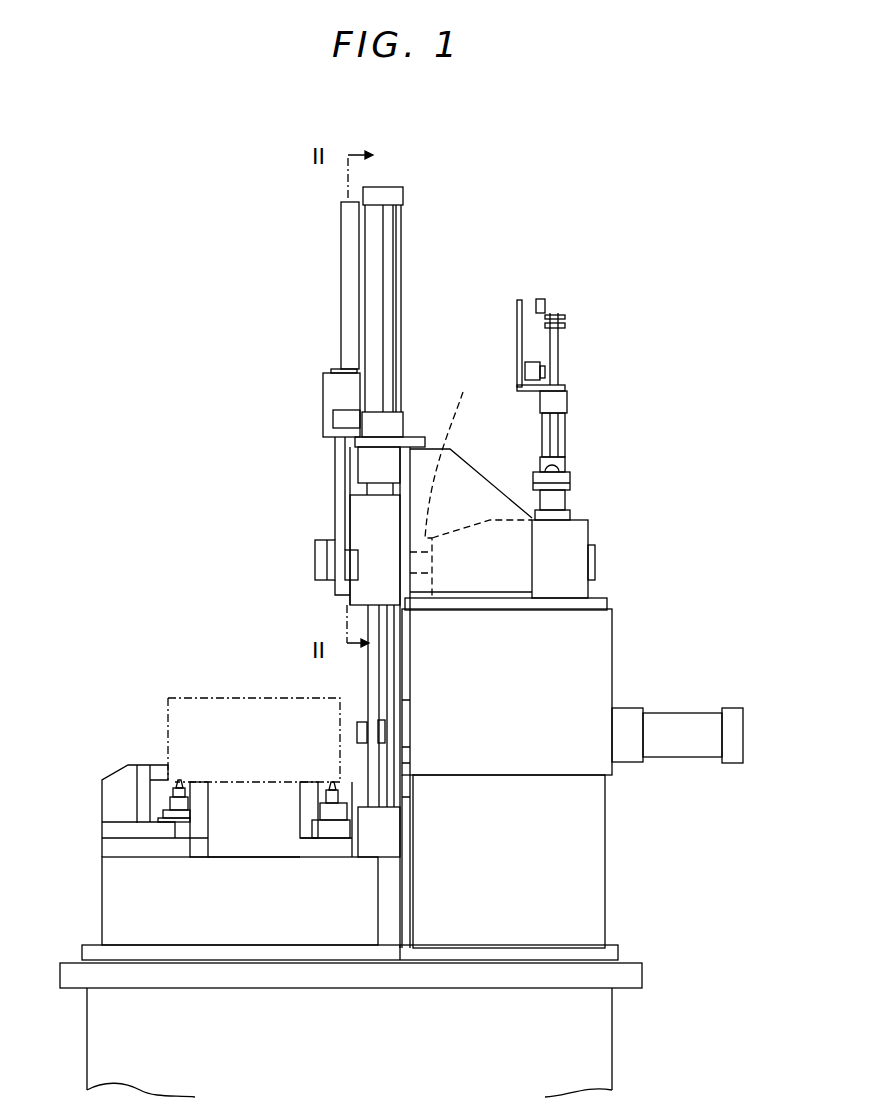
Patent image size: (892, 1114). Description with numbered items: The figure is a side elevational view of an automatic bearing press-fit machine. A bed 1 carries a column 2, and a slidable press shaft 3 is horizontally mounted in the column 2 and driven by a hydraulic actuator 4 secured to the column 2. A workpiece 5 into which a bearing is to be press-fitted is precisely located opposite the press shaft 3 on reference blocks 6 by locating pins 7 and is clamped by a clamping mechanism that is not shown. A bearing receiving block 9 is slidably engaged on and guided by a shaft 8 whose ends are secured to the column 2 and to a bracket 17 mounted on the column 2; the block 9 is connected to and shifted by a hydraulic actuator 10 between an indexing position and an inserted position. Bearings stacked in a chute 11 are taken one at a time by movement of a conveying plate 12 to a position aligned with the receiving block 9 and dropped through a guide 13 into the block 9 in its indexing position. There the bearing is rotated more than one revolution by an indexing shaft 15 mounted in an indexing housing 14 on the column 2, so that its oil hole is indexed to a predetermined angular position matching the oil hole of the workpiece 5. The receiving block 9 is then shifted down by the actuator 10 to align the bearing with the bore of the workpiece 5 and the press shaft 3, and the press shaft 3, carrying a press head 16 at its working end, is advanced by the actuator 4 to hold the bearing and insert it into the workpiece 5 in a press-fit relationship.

The bed 1 is at (612, 1060).
The column 2 is at (598, 852).
The press shaft 3 is at (332, 544).
The hydraulic actuator 4 is at (701, 722).
The workpiece 5 is at (205, 708).
The reference blocks 6 is at (303, 802).
The locating pins 7 is at (178, 779).
The shaft 8 is at (368, 690).
The bearing receiving block 9 is at (340, 597).
The hydraulic actuator 10 is at (400, 243).
The chute 11 is at (350, 257).
The conveying plate 12 is at (340, 428).
The guide 13 is at (337, 492).
The indexing housing 14 is at (592, 526).
The indexing shaft 15 is at (471, 486).
The press head 16 is at (357, 724).
The bracket 17 is at (472, 488).